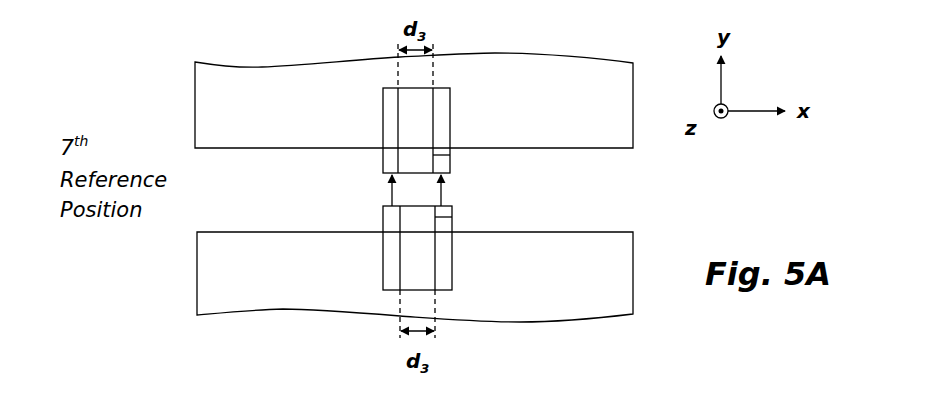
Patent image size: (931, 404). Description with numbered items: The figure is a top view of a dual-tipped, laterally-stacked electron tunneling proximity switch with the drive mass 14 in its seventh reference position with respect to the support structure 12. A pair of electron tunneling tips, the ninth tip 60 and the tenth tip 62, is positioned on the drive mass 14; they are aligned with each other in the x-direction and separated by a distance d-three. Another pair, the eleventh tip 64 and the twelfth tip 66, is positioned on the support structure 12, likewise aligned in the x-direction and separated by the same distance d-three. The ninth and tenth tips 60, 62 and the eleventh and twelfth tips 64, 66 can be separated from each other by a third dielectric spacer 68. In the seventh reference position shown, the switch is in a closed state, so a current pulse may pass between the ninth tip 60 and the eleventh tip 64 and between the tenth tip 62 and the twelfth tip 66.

The support structure 12 is at (598, 102).
The drive mass 14 is at (595, 287).
The ninth tip 60 is at (383, 254).
The tenth tip 62 is at (452, 265).
The eleventh tip 64 is at (383, 95).
The twelfth tip 66 is at (450, 102).
The third dielectric spacer 68 is at (450, 157).